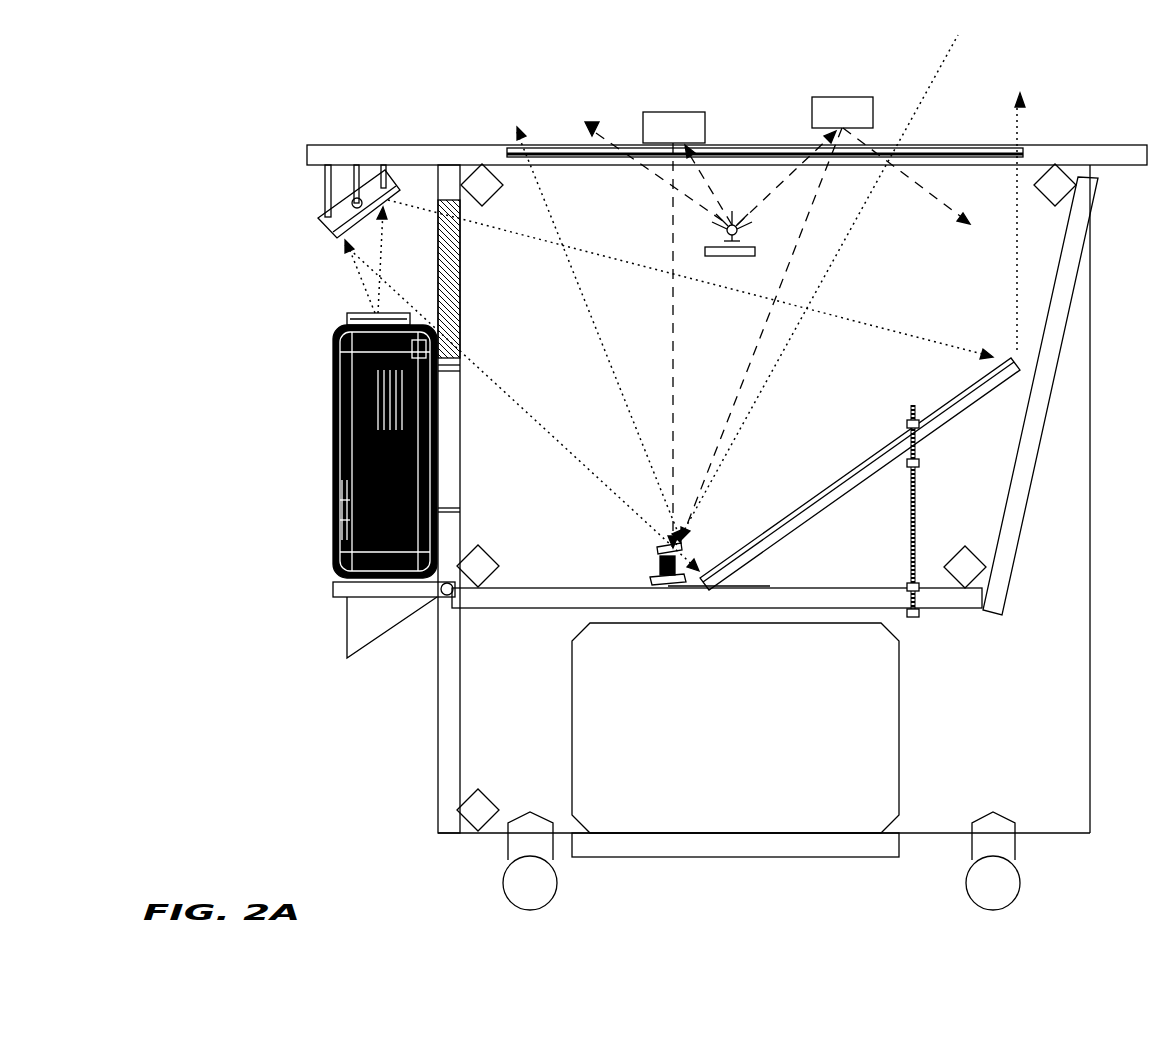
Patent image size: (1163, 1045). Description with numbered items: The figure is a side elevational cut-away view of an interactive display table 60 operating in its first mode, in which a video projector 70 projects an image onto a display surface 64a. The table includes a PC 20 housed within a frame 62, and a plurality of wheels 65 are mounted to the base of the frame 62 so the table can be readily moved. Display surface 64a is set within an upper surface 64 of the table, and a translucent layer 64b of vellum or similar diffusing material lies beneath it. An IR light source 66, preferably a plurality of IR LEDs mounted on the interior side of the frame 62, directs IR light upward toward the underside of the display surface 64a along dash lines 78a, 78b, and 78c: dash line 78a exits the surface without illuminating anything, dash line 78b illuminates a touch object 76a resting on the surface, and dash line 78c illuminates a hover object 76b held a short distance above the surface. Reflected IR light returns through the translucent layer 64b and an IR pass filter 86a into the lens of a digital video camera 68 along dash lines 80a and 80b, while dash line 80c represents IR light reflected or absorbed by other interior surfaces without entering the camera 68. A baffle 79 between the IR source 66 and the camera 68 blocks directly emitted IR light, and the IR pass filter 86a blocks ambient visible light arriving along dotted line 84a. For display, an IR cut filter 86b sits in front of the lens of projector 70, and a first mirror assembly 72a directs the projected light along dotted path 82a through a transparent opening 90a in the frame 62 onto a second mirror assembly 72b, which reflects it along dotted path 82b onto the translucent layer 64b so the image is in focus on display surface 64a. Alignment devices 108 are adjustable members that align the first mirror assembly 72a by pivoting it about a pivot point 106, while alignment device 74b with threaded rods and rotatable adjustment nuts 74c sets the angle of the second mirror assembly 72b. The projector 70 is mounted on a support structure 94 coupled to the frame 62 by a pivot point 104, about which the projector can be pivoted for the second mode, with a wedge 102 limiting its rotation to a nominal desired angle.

The PC 20 is at (900, 728).
The interactive display table 60 is at (290, 748).
The frame 62 is at (438, 722).
The upper surface 64 is at (472, 145).
The display surface 64a is at (565, 146).
The translucent layer 64b is at (932, 148).
The wheels 65 is at (505, 885).
The IR light source 66 is at (726, 232).
The digital video camera 68 is at (656, 562).
The video projector 70 is at (333, 420).
The first mirror assembly 72a is at (322, 243).
The second mirror assembly 72b is at (838, 480).
The alignment device 74b is at (916, 492).
The adjustment nuts 74c is at (907, 423).
The touch object 76a is at (668, 112).
The hover object 76b is at (833, 97).
The dash line 78a is at (647, 173).
The dash line 78b is at (704, 184).
The dash line 78c is at (795, 172).
The baffle 79 is at (727, 258).
The dash line 80a is at (670, 328).
The dash line 80b is at (750, 360).
The dash line 80c is at (935, 198).
The dotted path 82a is at (362, 285).
The dotted path 82b is at (578, 288).
The dotted line 84a is at (950, 48).
The IR pass filter 86a is at (658, 545).
The IR cut filter 86b is at (348, 318).
The transparent opening 90a is at (461, 330).
The support structure 94 is at (333, 597).
The wedge 102 is at (347, 645).
The pivot point 104 is at (452, 598).
The pivot point 106 is at (352, 205).
The alignment devices 108 is at (322, 162).